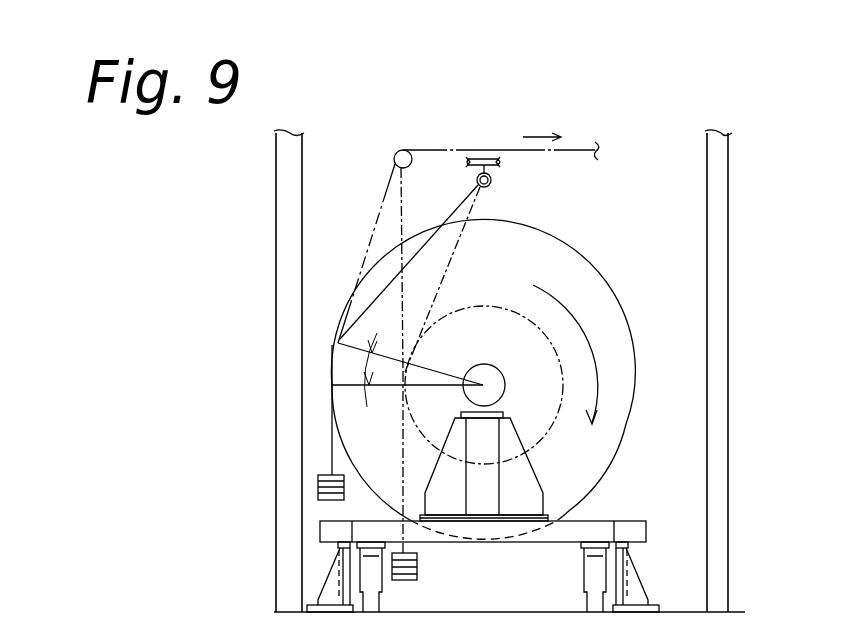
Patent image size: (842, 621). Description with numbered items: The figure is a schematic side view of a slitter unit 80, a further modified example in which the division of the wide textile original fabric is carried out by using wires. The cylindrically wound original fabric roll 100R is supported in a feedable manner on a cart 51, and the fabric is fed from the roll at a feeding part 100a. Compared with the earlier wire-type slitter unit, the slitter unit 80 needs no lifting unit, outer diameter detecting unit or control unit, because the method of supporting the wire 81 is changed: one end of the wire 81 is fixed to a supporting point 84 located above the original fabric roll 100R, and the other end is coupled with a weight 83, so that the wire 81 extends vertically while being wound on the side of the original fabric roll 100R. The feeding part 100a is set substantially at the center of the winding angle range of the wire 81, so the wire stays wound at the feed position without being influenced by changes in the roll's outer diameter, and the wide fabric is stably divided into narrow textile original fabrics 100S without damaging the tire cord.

The slitter unit 80 is at (351, 138).
The narrow textile original fabric 100S is at (498, 150).
The feeding part 100a is at (333, 362).
The wire 81 is at (428, 236).
The supporting point 84 is at (491, 181).
The original fabric roll 100R is at (573, 262).
The weight 83 is at (318, 489).
The cart 51 is at (553, 536).